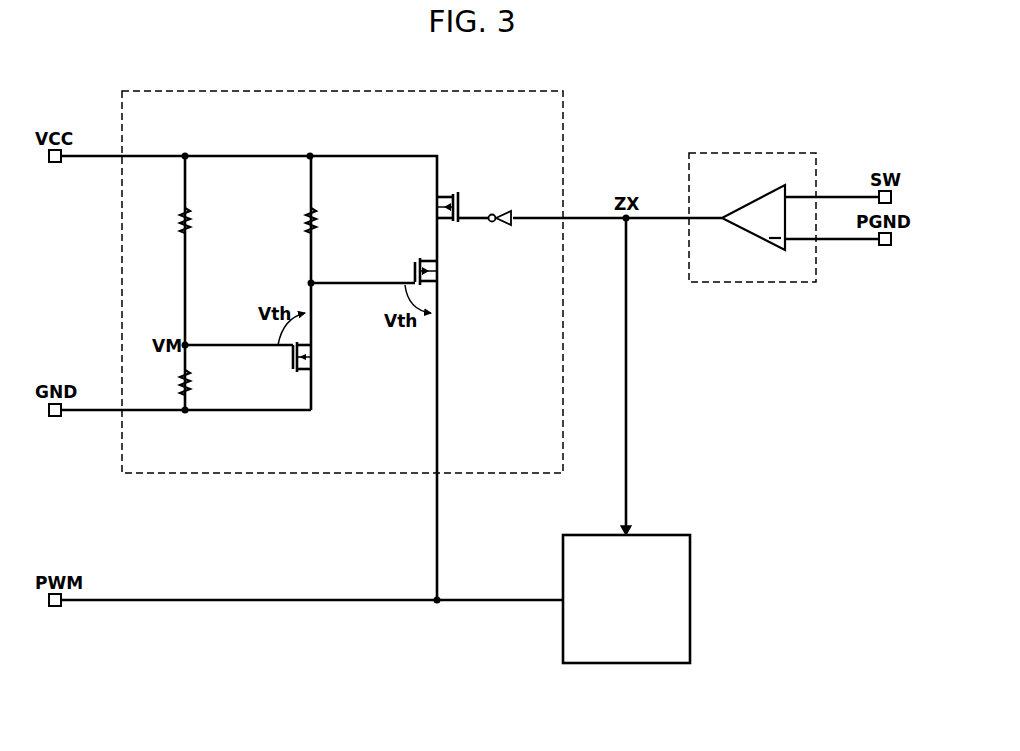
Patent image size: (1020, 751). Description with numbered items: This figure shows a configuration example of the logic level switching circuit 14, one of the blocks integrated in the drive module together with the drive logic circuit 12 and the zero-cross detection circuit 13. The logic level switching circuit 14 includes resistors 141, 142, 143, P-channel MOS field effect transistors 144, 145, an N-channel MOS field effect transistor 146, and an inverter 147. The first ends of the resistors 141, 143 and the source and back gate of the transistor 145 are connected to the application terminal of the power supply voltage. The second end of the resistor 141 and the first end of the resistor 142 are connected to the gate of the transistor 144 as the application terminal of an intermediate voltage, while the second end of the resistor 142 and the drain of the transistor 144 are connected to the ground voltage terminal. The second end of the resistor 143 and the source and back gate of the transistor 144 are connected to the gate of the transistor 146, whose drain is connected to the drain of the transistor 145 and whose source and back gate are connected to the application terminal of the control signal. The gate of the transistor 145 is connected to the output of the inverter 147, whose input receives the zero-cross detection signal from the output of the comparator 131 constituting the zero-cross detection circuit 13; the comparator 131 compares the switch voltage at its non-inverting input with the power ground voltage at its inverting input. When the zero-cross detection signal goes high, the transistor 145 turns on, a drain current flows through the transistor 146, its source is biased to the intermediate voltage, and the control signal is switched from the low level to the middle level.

The drive logic circuit 12 is at (659, 534).
The zero-cross detection circuit 13 is at (753, 152).
The comparator 131 is at (760, 200).
The logic level switching circuit 14 is at (342, 91).
The resistor 141 is at (213, 220).
The resistor 142 is at (213, 382).
The resistor 143 is at (339, 220).
The P-channel MOS field effect transistor 144 is at (328, 357).
The P-channel MOS field effect transistor 145 is at (425, 207).
The N-channel MOS field effect transistor 146 is at (452, 271).
The inverter 147 is at (498, 209).